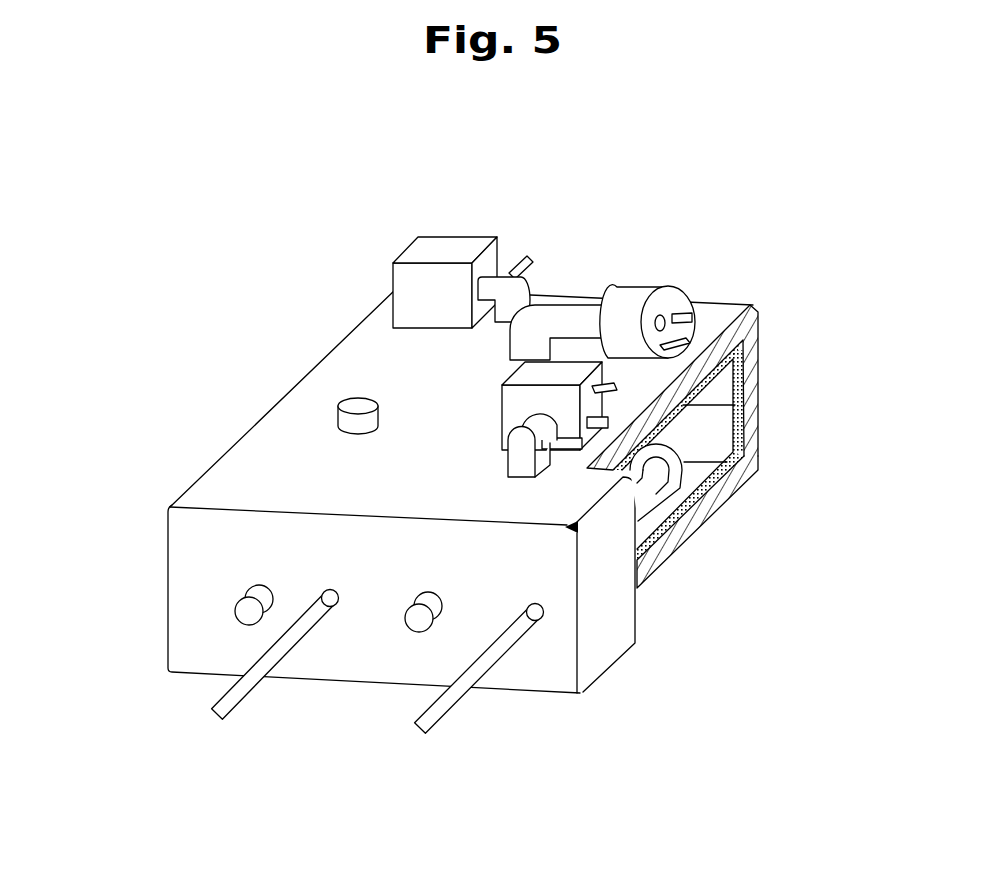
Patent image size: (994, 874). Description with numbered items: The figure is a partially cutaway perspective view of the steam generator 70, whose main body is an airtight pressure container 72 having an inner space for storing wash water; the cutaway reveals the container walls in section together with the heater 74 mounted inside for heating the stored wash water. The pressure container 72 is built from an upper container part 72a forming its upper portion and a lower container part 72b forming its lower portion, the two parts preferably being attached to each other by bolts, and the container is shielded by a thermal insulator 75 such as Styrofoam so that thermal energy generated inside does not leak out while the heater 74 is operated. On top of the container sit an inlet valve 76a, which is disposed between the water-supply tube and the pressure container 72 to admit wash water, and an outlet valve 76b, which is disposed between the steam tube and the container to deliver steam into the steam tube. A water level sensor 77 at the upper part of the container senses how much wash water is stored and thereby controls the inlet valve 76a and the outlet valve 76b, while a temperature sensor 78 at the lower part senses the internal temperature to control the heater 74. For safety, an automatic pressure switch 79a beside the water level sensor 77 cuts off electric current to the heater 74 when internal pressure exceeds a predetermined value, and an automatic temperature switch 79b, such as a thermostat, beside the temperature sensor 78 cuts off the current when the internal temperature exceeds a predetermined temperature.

The steam generator 70 is at (205, 445).
The pressure container 72 is at (756, 446).
The upper container part 72a is at (737, 360).
The lower container part 72b is at (737, 418).
The heater 74 is at (657, 495).
The thermal insulator 75 is at (757, 470).
The inlet valve 76a is at (424, 250).
The outlet valve 76b is at (516, 378).
The water level sensor 77 is at (357, 407).
The temperature sensor 78 is at (250, 610).
The automatic pressure switch 79a is at (670, 295).
The automatic temperature switch 79b is at (420, 617).